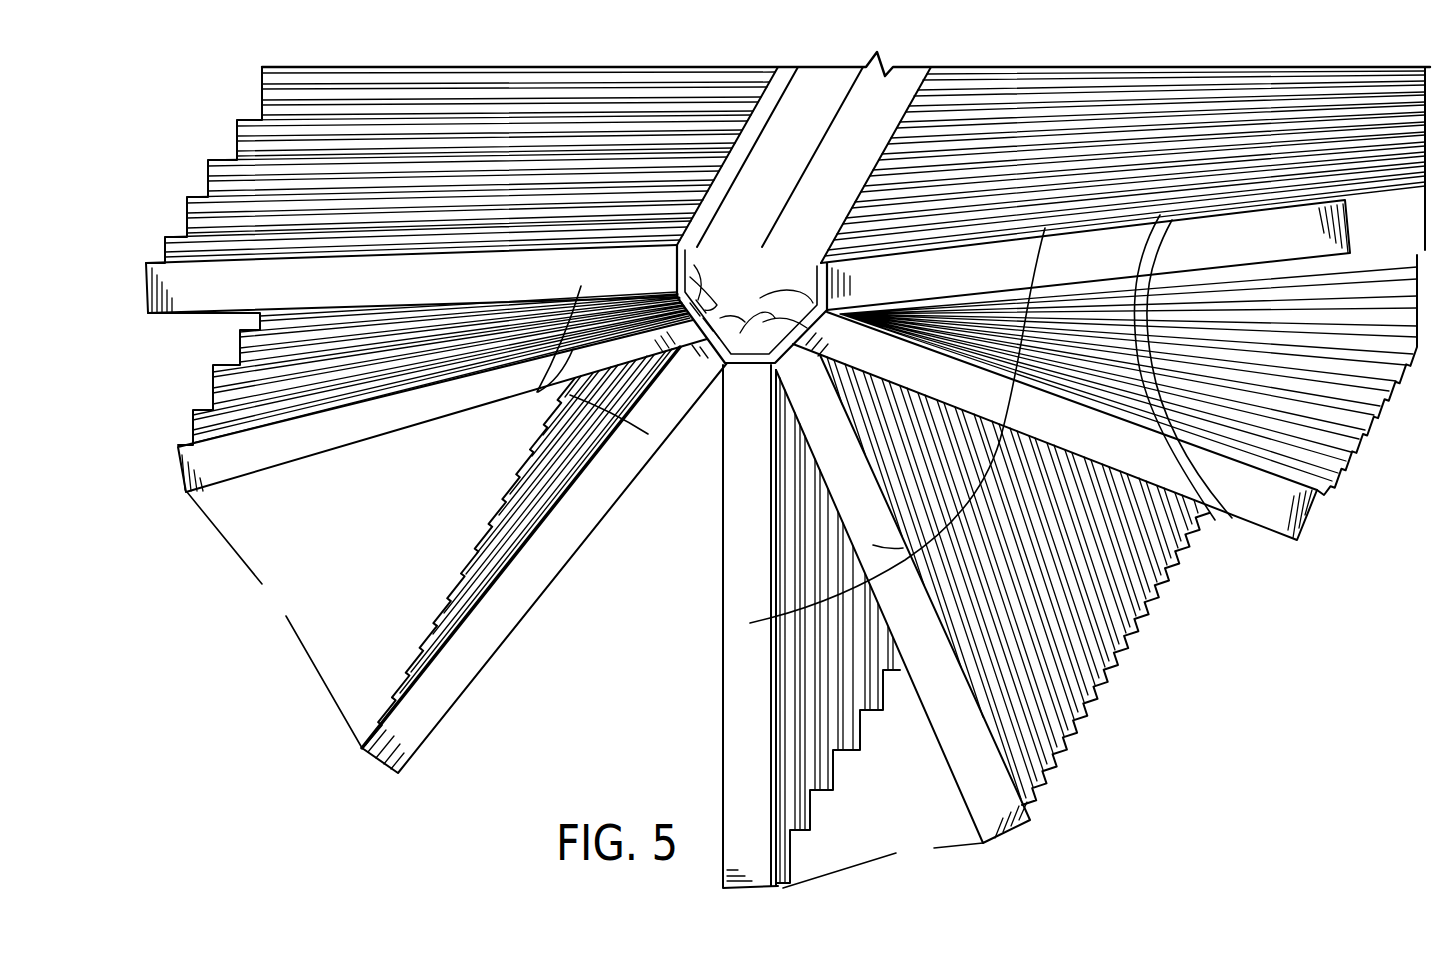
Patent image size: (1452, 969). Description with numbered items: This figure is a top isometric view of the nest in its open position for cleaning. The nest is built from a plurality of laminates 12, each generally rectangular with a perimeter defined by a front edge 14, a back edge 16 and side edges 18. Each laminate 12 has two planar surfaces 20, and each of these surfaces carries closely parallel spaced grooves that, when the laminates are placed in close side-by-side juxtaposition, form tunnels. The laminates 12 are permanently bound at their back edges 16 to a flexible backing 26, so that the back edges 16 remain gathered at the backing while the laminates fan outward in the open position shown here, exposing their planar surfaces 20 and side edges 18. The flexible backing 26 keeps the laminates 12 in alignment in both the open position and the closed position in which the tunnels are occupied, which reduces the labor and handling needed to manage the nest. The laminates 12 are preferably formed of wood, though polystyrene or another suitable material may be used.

The laminate 12 is at (376, 289).
The front edge 14 is at (150, 316).
The back edge 16 is at (712, 303).
The side edges 18 is at (1005, 414).
The planar surfaces 20 is at (242, 118).
The flexible backing 26 is at (806, 224).